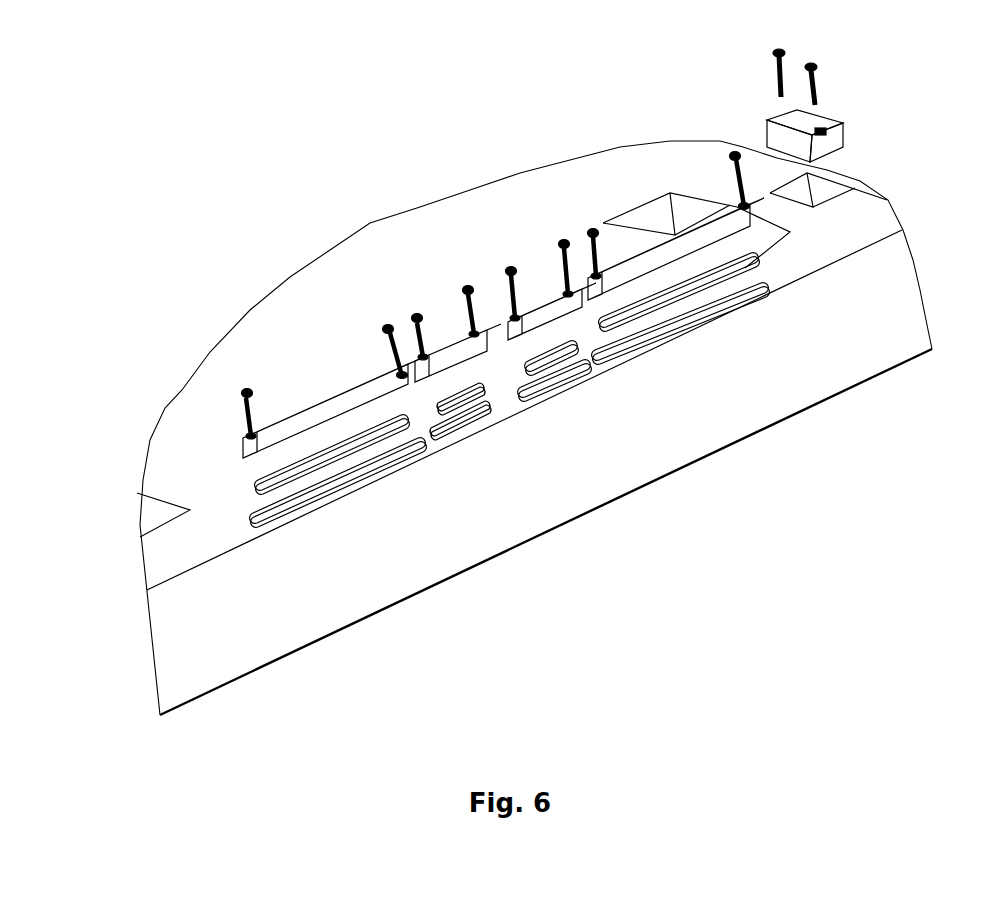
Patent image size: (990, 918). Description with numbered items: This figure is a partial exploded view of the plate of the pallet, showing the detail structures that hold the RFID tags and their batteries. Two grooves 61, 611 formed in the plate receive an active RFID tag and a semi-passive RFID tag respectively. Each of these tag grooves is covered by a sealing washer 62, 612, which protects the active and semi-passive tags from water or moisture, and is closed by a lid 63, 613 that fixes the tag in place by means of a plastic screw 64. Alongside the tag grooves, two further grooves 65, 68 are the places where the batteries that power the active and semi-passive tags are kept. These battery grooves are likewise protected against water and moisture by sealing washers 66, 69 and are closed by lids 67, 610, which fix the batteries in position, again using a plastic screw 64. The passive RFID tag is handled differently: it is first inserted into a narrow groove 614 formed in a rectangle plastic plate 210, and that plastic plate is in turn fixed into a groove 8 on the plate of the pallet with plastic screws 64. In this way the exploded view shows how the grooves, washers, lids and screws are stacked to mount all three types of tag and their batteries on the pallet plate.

The groove 8 is at (888, 200).
The groove 61 is at (337, 492).
The sealing washer 62 is at (383, 463).
The lid 63 is at (333, 397).
The plastic screw 64 is at (247, 432).
The groove 65 is at (477, 413).
The sealing washer 66 is at (517, 407).
The lid 67 is at (462, 345).
The groove 68 is at (570, 357).
The sealing washer 69 is at (610, 370).
The lid 610 is at (547, 283).
The groove 611 is at (693, 323).
The sealing washer 612 is at (717, 330).
The lid 613 is at (673, 233).
The narrow groove 614 is at (845, 128).
The rectangle plastic plate 210 is at (768, 117).